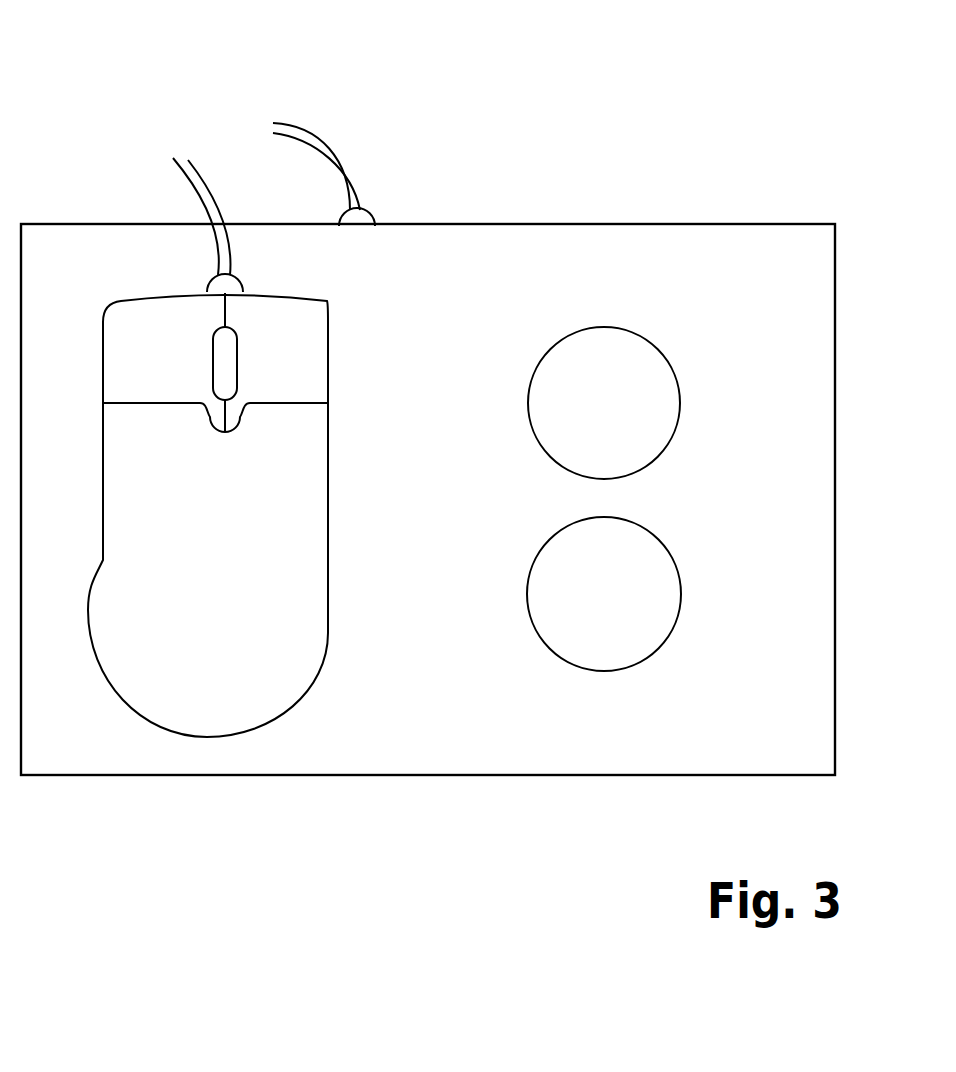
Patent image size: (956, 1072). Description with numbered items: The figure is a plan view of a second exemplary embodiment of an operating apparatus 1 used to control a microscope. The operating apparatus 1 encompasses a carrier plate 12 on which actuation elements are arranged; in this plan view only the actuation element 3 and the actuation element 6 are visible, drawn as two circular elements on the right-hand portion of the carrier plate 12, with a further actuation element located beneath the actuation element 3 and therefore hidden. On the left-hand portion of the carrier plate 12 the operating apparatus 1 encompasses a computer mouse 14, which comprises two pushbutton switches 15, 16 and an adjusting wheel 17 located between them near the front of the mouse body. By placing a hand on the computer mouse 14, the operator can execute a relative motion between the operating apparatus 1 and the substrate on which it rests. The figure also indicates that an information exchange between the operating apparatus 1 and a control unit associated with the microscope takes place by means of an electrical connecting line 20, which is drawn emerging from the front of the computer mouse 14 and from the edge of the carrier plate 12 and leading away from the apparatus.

The operating apparatus 1 is at (562, 150).
The actuation element 3 is at (616, 608).
The actuation element 6 is at (616, 418).
The carrier plate 12 is at (718, 222).
The computer mouse 14 is at (328, 608).
The pushbutton switch 15 is at (177, 374).
The pushbutton switch 16 is at (317, 374).
The adjusting wheel 17 is at (227, 378).
The electrical connecting line 20 is at (190, 163).